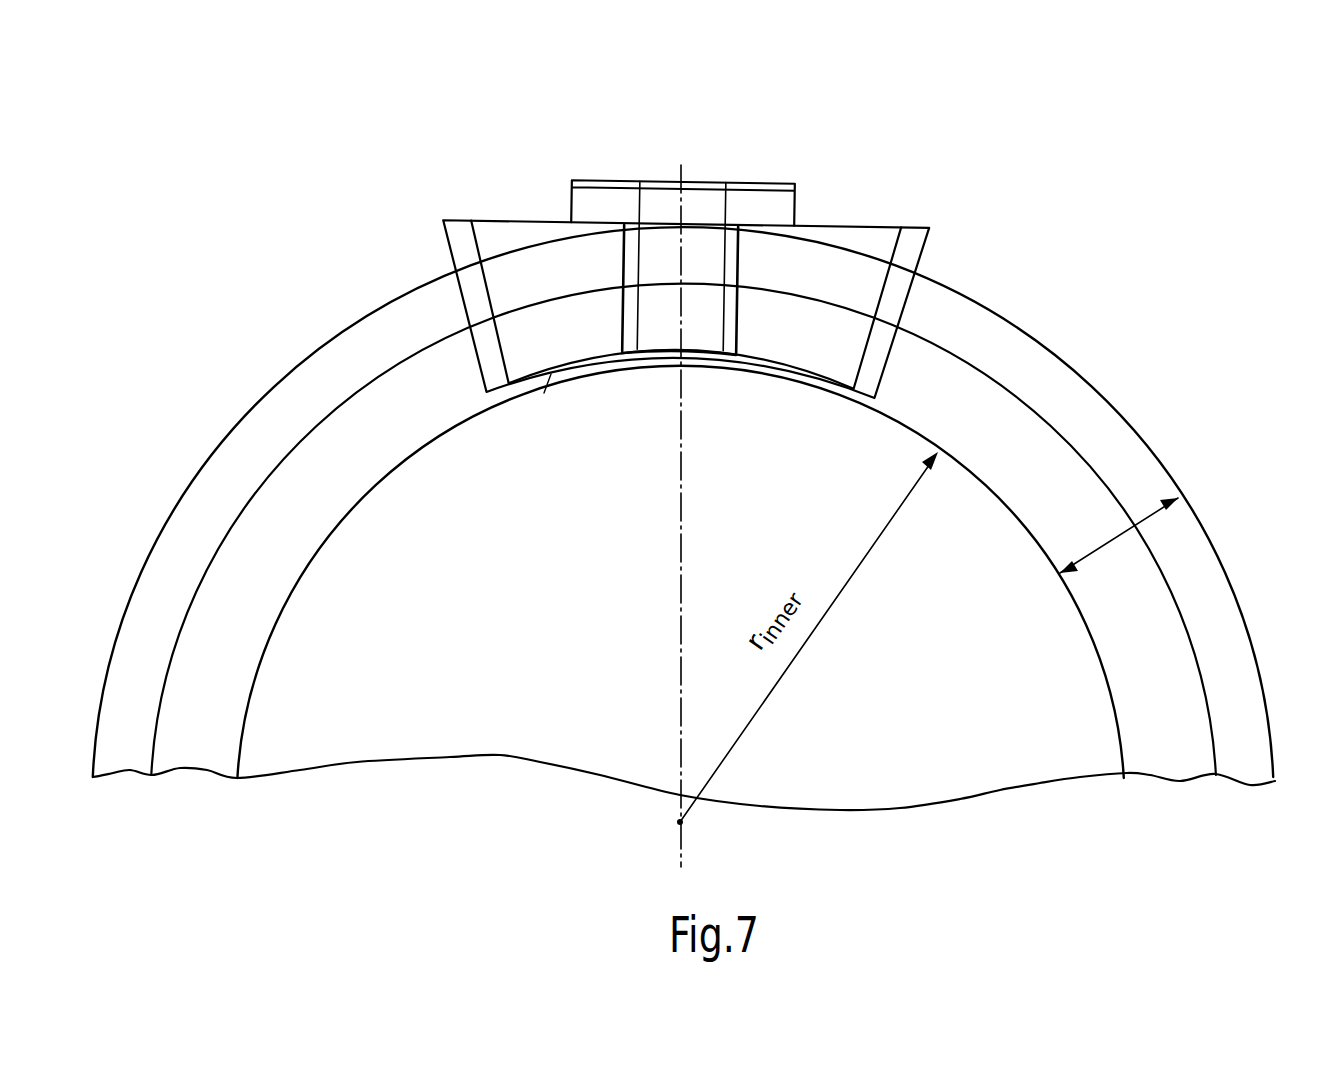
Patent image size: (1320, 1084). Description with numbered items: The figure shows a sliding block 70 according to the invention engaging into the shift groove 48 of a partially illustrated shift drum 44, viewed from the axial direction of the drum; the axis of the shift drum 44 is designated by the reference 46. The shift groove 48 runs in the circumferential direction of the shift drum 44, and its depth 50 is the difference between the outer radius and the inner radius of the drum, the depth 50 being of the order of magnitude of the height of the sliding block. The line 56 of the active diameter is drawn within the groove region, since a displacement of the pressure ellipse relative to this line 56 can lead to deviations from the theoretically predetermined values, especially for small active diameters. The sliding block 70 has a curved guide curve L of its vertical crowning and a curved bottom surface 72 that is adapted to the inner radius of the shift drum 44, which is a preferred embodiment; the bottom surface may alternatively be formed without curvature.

The sliding block 70 is at (528, 191).
The line of the active diameter 56 is at (745, 284).
The curved bottom surface 72 is at (551, 374).
The curved guide curve L is at (760, 293).
The depth of the shift groove 50 is at (1107, 540).
The axis of the shift drum 46 is at (680, 822).
The shift drum 44 is at (395, 653).
The shift groove 48 is at (209, 712).